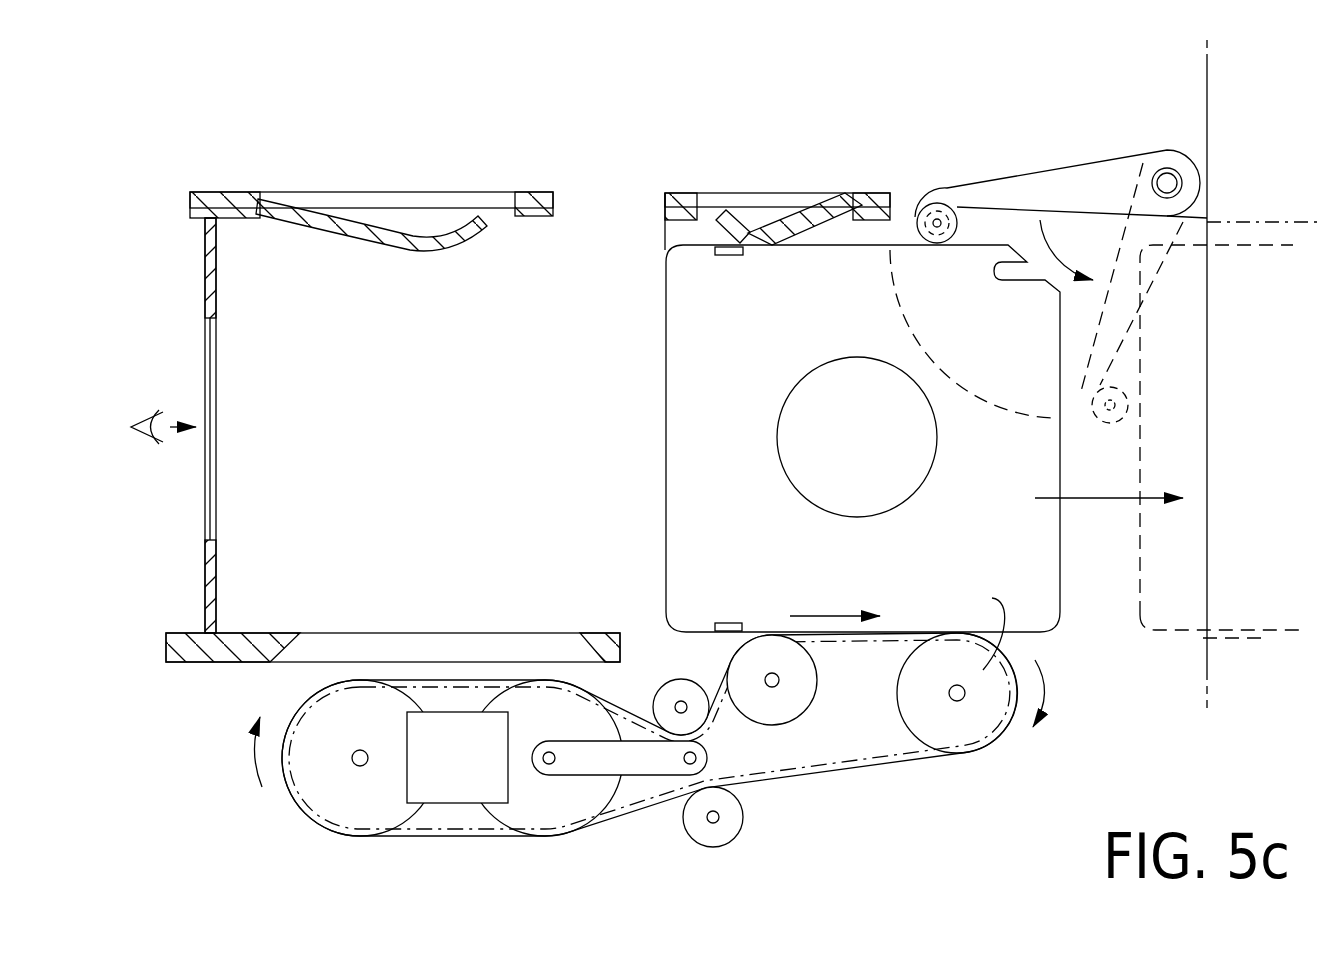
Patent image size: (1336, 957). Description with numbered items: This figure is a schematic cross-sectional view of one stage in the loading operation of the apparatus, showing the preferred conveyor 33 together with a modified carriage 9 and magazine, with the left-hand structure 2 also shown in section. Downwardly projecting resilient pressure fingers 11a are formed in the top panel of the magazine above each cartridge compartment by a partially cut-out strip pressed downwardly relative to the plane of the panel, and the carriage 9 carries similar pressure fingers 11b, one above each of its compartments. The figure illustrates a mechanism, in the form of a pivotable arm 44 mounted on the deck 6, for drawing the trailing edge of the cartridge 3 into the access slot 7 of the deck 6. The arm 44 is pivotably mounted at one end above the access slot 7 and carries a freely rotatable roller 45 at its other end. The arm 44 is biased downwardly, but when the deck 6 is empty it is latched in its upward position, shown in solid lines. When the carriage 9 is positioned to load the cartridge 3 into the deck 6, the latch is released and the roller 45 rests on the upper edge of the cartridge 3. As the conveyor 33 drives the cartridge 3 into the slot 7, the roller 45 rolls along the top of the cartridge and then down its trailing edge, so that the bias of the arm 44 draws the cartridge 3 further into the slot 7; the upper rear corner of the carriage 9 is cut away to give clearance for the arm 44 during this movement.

The cassette loading fixture 2 is at (252, 192).
The cartridge 3 is at (742, 327).
The deck 6 is at (1206, 97).
The access slot 7 is at (1246, 226).
The carriage 9 is at (723, 193).
The pressure fingers 11a is at (413, 232).
The pressure fingers 11b is at (773, 237).
The conveyor 33 is at (786, 810).
The pivotable arm 44 is at (1002, 178).
The roller 45 is at (913, 207).